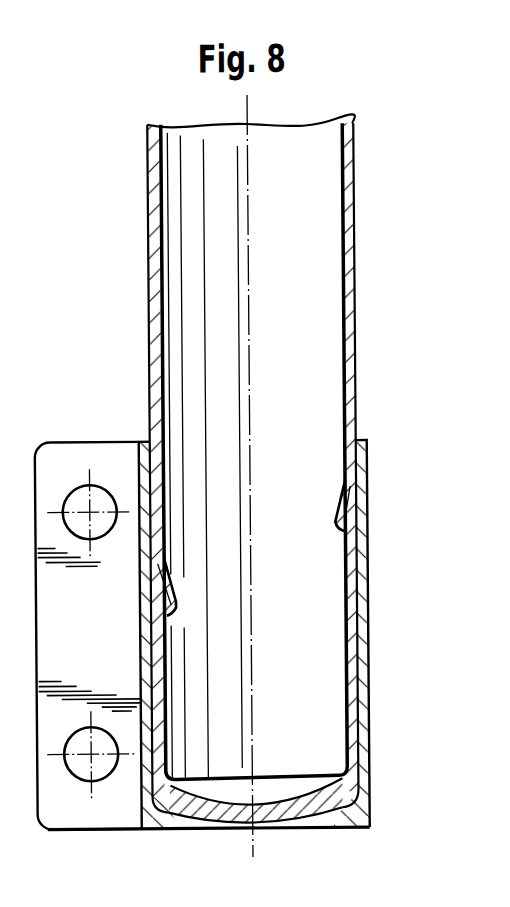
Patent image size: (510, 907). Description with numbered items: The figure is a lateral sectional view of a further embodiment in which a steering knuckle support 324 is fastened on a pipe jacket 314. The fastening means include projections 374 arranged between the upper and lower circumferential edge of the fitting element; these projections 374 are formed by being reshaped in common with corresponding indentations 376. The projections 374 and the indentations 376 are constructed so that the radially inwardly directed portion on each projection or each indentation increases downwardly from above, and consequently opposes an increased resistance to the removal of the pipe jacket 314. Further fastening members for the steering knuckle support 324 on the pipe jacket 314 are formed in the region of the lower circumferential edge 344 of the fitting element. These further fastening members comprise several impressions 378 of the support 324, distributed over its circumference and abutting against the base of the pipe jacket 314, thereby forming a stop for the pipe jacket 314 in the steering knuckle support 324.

The pipe jacket 314 is at (150, 238).
The steering knuckle support 324 is at (361, 457).
The lower circumferential edge 344 is at (355, 825).
The projections 374 is at (152, 588).
The indentations 376 is at (174, 604).
The impressions 378 is at (336, 808).